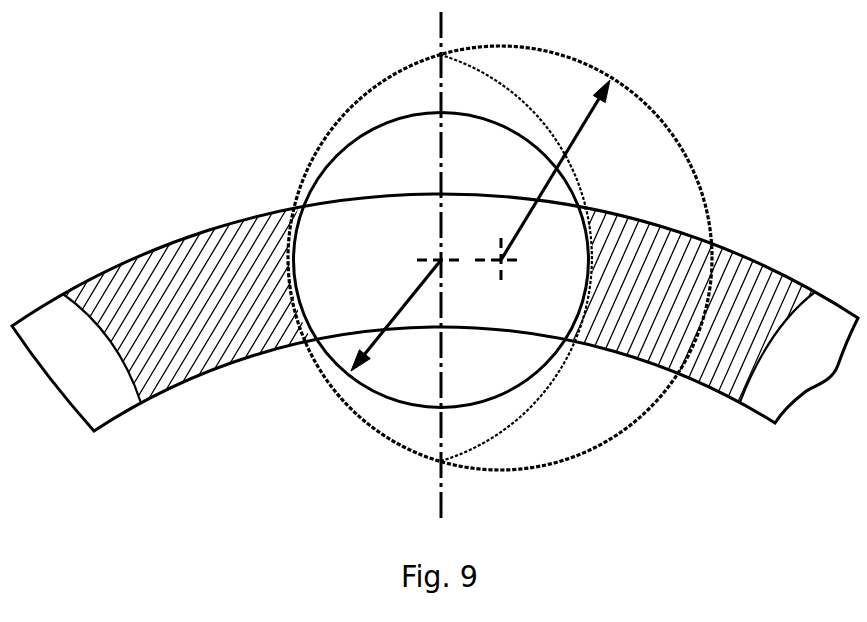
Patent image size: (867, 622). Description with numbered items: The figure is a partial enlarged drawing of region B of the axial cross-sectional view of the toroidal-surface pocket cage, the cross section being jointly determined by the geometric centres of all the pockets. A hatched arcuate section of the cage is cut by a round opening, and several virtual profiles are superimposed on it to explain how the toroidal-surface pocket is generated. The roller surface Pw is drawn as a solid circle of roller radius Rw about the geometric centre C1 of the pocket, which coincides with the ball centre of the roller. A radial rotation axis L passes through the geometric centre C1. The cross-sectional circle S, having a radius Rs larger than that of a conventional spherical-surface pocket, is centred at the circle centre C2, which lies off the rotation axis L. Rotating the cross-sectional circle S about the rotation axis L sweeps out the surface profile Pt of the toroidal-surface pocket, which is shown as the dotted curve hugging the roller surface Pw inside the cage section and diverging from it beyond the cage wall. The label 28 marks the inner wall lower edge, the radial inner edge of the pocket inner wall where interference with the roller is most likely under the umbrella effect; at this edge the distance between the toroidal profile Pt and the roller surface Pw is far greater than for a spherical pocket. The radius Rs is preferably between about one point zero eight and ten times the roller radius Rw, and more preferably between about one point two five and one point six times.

The inner wall lower edge 28 is at (350, 333).
The roller surface Pw is at (328, 165).
The surface profile of the toroidal-surface pocket Pt is at (352, 107).
The rotation axis L is at (426, 266).
The geometric centre of the pocket C1 is at (447, 280).
The circle centre of the cross-sectional circle C2 is at (506, 269).
The cross-sectional circle S is at (668, 124).
The region B is at (647, 37).
The radius of the cross-sectional circle Rs is at (555, 170).
The roller radius Rw is at (396, 315).